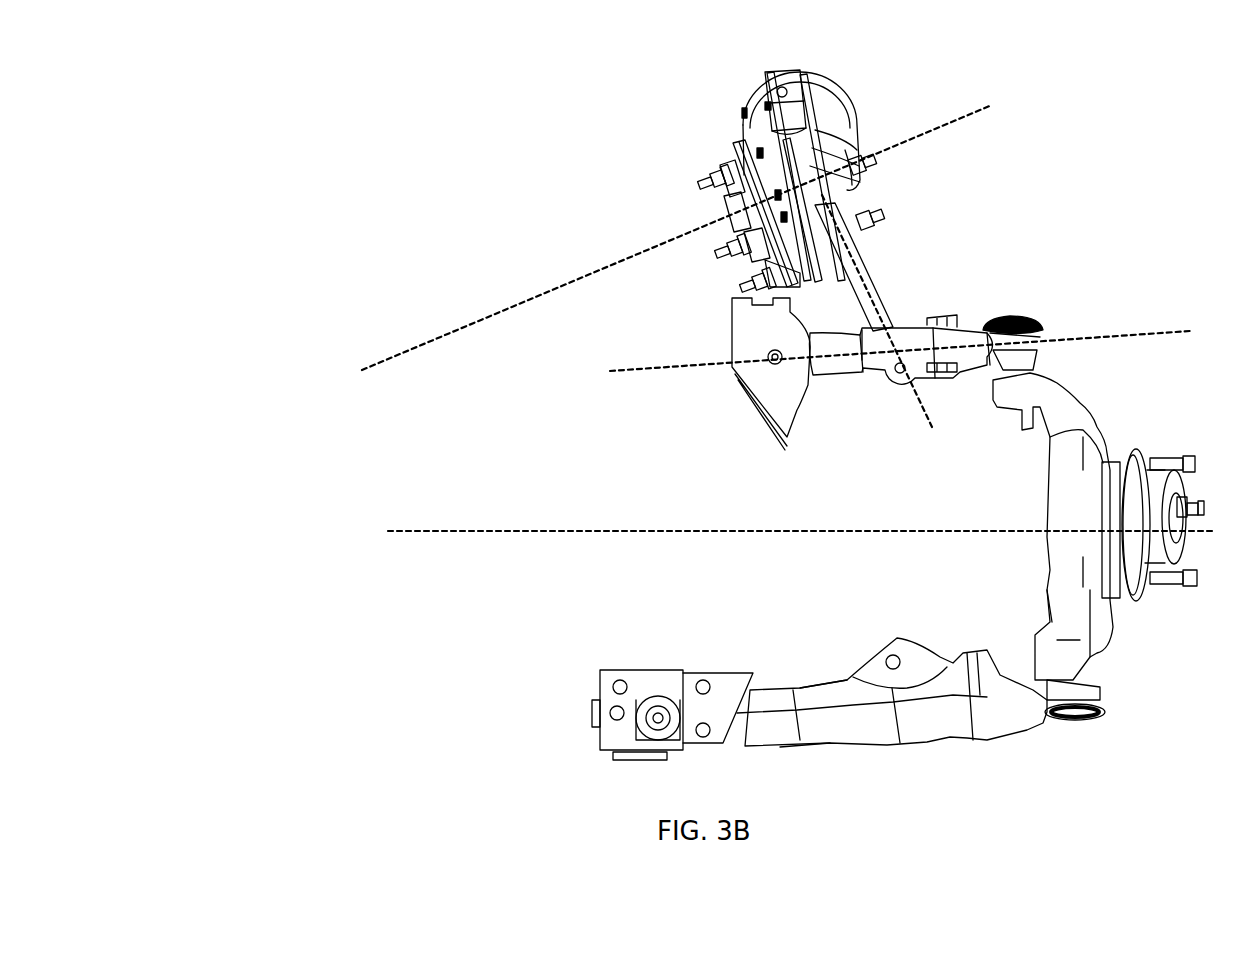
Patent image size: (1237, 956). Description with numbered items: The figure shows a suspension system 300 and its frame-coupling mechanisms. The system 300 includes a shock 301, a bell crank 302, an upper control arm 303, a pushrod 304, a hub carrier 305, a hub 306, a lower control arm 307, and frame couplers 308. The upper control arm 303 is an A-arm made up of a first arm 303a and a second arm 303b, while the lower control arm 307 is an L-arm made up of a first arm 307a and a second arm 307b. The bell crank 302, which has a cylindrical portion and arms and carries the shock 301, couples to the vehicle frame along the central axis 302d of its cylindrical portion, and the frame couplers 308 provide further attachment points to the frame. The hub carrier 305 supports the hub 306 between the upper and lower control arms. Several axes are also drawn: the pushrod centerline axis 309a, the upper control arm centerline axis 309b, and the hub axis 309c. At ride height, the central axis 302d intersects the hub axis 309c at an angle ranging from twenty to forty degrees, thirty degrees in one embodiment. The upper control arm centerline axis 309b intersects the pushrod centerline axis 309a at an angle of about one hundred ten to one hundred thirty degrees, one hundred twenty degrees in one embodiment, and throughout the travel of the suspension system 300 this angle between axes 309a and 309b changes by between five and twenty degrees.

The suspension system 300 is at (292, 114).
The shock 301 is at (862, 80).
The bell crank 302 is at (784, 177).
The central axis 302d is at (381, 342).
The upper control arm 303 is at (932, 340).
The first arm 303a is at (858, 335).
The second arm 303b is at (845, 380).
The pushrod 304 is at (870, 278).
The hub carrier 305 is at (1085, 395).
The hub 306 is at (1145, 465).
The lower control arm 307 is at (978, 712).
The first arm 307a is at (818, 684).
The second arm 307b is at (798, 752).
The frame couplers 308 is at (736, 146).
The pushrod centerline axis 309a is at (934, 409).
The upper control arm centerline axis 309b is at (1158, 326).
The hub axis 309c is at (377, 526).